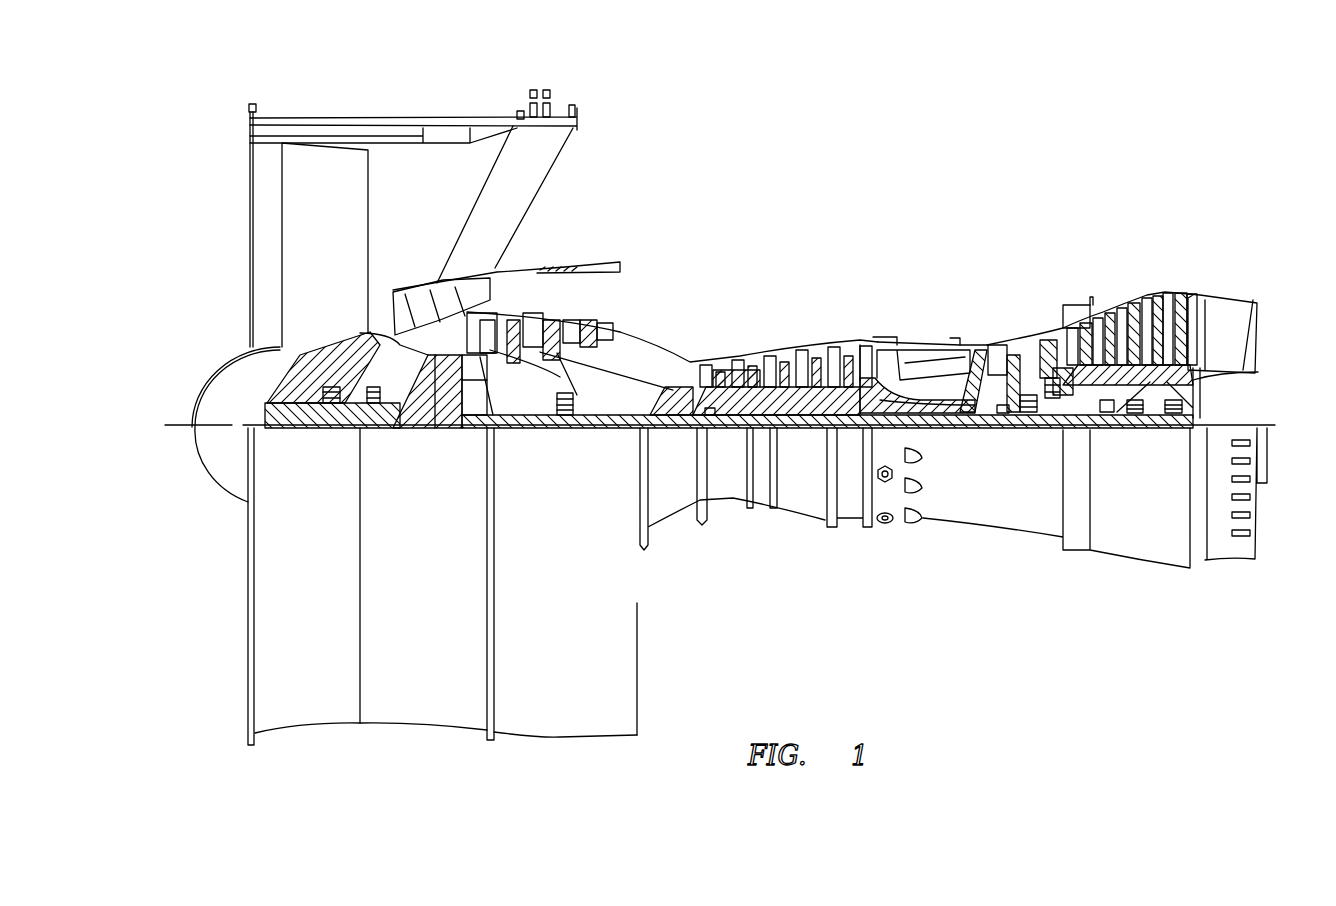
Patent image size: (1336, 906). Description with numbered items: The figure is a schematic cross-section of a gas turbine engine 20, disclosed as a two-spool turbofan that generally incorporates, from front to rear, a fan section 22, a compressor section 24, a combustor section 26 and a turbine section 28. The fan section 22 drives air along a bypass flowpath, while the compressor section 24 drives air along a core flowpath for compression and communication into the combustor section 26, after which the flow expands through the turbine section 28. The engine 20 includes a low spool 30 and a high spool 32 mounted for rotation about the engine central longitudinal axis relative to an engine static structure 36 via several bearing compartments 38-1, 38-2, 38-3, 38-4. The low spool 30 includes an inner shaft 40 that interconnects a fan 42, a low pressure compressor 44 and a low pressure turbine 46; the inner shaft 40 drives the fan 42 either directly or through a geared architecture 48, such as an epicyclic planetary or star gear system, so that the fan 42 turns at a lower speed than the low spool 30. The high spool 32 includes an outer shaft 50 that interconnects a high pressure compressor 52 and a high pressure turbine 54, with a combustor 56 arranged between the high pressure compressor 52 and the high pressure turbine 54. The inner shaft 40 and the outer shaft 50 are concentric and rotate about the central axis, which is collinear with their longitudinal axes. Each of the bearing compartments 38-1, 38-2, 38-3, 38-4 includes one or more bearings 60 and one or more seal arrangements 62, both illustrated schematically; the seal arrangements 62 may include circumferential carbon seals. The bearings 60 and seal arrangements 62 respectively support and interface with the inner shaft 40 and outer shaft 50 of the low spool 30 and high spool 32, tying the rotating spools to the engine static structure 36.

The gas turbine engine 20 is at (1033, 165).
The fan section 22 is at (488, 98).
The compressor section 24 is at (497, 228).
The combustor section 26 is at (985, 228).
The turbine section 28 is at (1200, 228).
The low spool 30 is at (807, 433).
The high spool 32 is at (840, 368).
The engine static structure 36 is at (851, 527).
The bearing compartment 38-1 is at (520, 482).
The bearing compartment 38-2 is at (570, 540).
The bearing compartment 38-3 is at (990, 298).
The bearing compartment 38-4 is at (1203, 495).
The inner shaft 40 is at (663, 430).
The fan 42 is at (303, 255).
The low pressure compressor 44 is at (567, 322).
The low pressure turbine 46 is at (1133, 300).
The geared architecture 48 is at (442, 432).
The outer shaft 50 is at (933, 413).
The high pressure compressor 52 is at (792, 390).
The high pressure turbine 54 is at (997, 360).
The combustor 56 is at (925, 370).
The bearings 60 is at (1167, 430).
The seal arrangements 62 is at (713, 418).